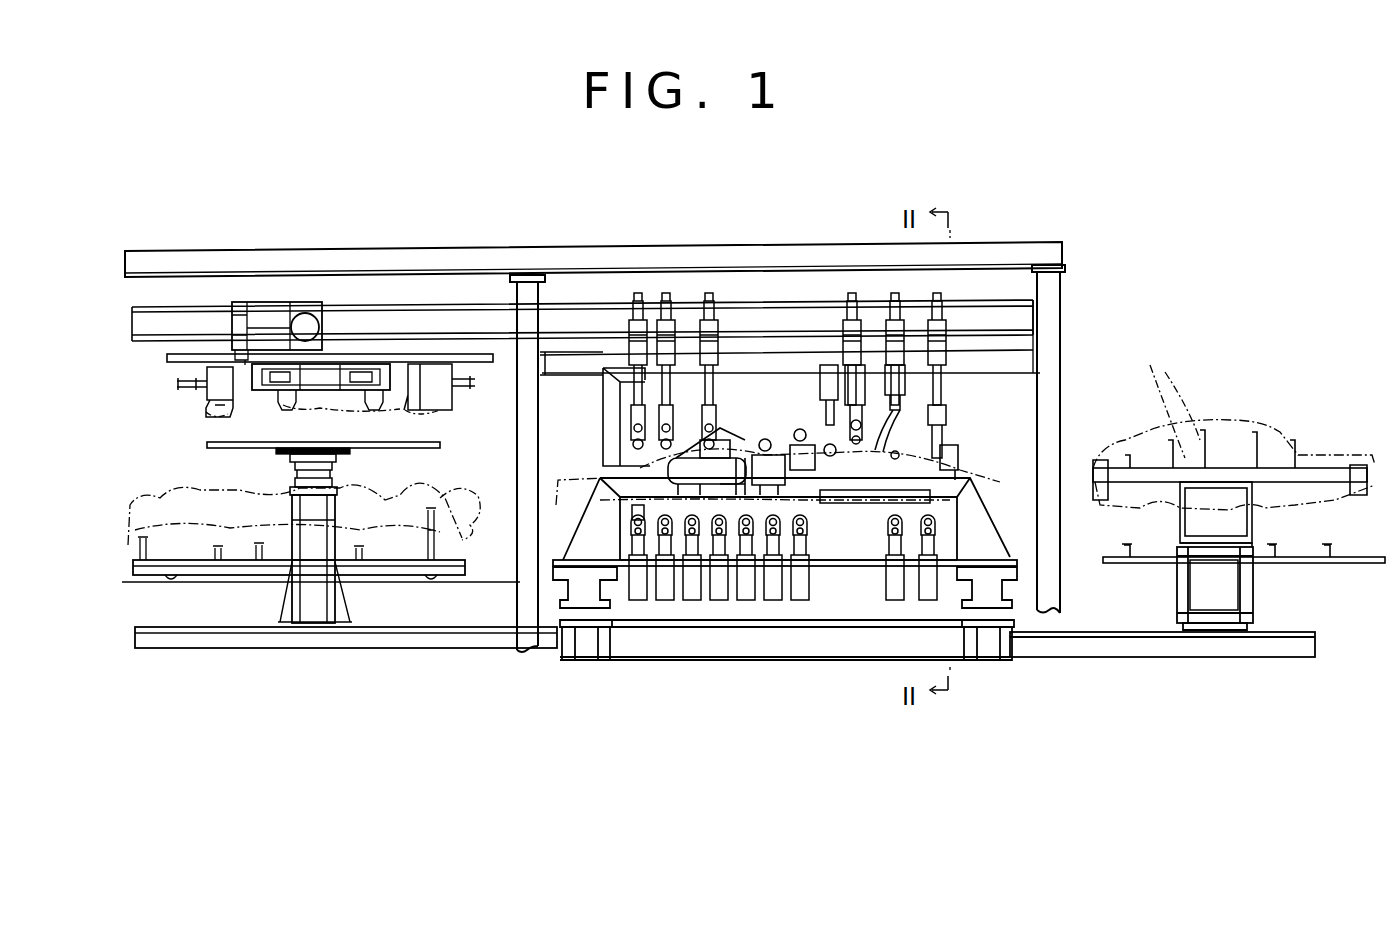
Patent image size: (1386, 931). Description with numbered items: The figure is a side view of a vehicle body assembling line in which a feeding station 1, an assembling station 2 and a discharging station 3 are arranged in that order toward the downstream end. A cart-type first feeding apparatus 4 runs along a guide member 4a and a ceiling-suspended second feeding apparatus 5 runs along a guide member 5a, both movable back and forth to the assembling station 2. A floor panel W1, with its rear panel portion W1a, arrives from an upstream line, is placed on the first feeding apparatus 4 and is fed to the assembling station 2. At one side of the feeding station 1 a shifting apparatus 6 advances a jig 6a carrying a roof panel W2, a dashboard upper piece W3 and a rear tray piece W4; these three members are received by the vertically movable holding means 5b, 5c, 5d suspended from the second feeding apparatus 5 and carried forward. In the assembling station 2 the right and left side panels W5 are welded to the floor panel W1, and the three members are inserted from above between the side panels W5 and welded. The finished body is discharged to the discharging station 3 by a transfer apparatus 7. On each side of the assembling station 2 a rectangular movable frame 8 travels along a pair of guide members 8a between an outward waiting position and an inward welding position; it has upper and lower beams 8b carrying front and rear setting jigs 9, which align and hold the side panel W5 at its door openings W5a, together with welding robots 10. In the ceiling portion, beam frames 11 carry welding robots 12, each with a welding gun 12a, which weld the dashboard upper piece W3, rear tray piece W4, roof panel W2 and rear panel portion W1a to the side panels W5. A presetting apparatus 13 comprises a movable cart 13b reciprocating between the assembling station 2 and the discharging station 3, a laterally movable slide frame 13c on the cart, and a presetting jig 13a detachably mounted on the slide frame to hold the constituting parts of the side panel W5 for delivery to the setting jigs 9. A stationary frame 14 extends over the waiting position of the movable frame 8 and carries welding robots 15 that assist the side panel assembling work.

The feeding station 1 is at (321, 660).
The assembling station 2 is at (813, 670).
The discharging station 3 is at (1162, 667).
The first feeding apparatus 4 is at (129, 542).
The guide member 4a is at (490, 576).
The second feeding apparatus 5 is at (285, 284).
The guide member 5a is at (384, 322).
The holding means for roof panel 5b is at (346, 362).
The holding means for dashboard upper piece 5c is at (215, 365).
The holding means for rear tray piece 5d is at (455, 362).
The shifting apparatus 6 is at (275, 481).
The jig 6a is at (376, 449).
The transfer apparatus 7 is at (1354, 576).
The movable frame 8 is at (965, 518).
The guide member 8a is at (575, 655).
The upper and lower beams 8b is at (950, 478).
The setting jig 9 is at (716, 455).
The welding robot 10 is at (660, 588).
The beam frame 11 is at (553, 362).
The welding robot 12 is at (674, 318).
The welding gun 12a is at (612, 462).
The presetting apparatus 13 is at (1170, 594).
The presetting jig 13a is at (1135, 466).
The movable cart 13b is at (1250, 598).
The slide frame 13c is at (1250, 516).
The stationary frame 14 is at (810, 372).
The welding robot 15 is at (866, 370).
The floor panel W1 is at (163, 500).
The rear panel portion W1a is at (440, 488).
The roof panel W2 is at (330, 408).
The dashboard upper piece W3 is at (206, 414).
The rear tray piece W4 is at (440, 410).
The side panel W5 is at (1235, 428).
The door opening W5a is at (771, 560).